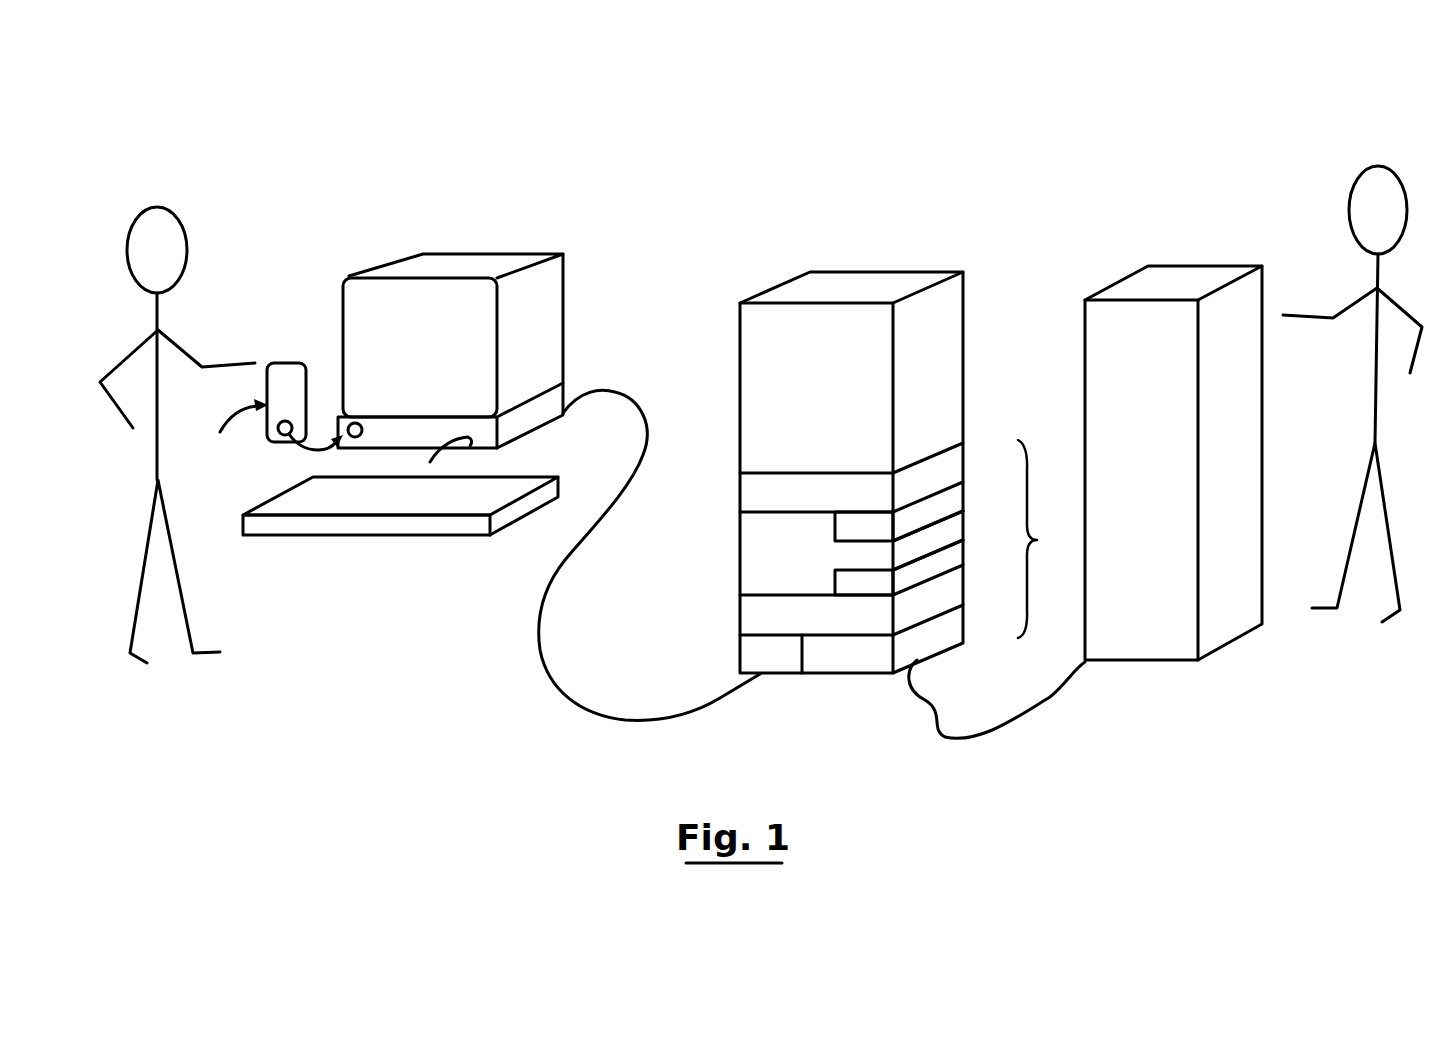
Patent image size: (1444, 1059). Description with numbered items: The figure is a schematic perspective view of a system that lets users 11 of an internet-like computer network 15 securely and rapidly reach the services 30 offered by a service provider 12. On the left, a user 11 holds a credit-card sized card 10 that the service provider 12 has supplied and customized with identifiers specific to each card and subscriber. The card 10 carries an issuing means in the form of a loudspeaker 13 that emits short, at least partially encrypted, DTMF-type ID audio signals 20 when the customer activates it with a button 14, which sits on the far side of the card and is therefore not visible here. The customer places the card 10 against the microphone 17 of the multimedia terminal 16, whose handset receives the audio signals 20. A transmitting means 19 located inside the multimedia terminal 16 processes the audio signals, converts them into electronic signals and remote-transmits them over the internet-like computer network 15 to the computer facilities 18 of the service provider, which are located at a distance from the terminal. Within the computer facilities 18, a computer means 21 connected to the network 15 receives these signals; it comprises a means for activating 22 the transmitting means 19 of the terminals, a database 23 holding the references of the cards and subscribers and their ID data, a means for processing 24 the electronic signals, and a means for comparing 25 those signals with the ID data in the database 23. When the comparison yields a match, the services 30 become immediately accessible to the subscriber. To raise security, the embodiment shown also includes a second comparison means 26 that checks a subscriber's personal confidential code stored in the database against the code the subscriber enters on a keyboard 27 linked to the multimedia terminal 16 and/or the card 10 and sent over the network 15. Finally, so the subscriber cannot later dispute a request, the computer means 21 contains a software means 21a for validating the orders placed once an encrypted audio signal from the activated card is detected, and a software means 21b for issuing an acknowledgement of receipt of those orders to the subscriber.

The card 10 is at (290, 362).
The user 11 is at (160, 217).
The service provider 12 is at (1373, 183).
The loudspeaker 13 is at (275, 429).
The button 14 is at (232, 408).
The internet-like computer network 15 is at (547, 672).
The multimedia terminal 16 is at (473, 266).
The microphone 17 is at (363, 438).
The computer facilities 18 is at (857, 281).
The transmitting means 19 is at (510, 432).
The audio signals 20 is at (322, 452).
The computer means 21 is at (1043, 539).
The software means for validating orders 21a is at (780, 660).
The software means for issuing acknowledgement of receipt 21b is at (928, 637).
The means for activating 22 is at (750, 497).
The database 23 is at (750, 560).
The means for processing 24 is at (747, 620).
The means for comparing 25 is at (853, 583).
The second comparison means 26 is at (942, 505).
The keyboard 27 is at (445, 525).
The services 30 is at (1180, 278).